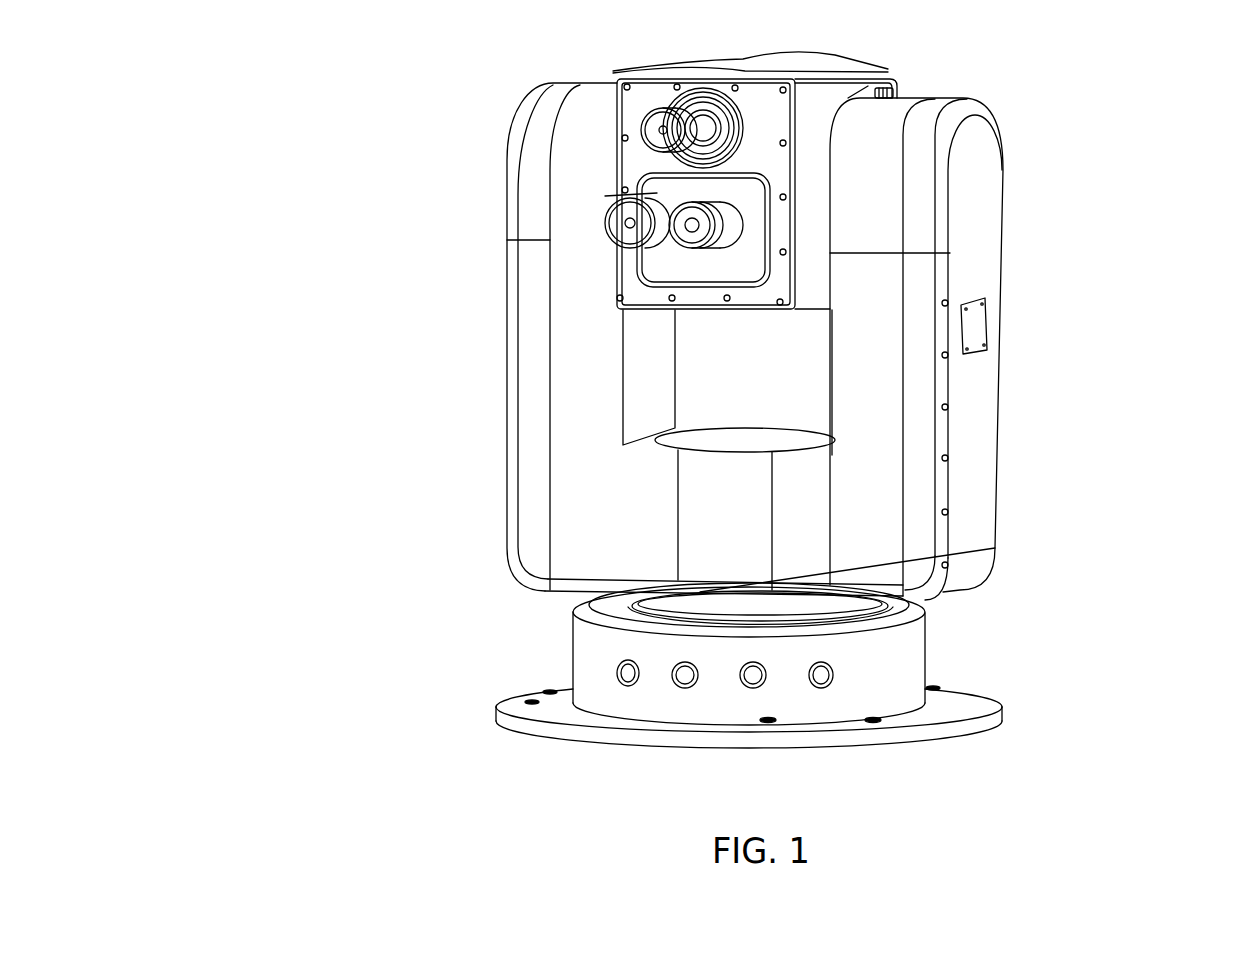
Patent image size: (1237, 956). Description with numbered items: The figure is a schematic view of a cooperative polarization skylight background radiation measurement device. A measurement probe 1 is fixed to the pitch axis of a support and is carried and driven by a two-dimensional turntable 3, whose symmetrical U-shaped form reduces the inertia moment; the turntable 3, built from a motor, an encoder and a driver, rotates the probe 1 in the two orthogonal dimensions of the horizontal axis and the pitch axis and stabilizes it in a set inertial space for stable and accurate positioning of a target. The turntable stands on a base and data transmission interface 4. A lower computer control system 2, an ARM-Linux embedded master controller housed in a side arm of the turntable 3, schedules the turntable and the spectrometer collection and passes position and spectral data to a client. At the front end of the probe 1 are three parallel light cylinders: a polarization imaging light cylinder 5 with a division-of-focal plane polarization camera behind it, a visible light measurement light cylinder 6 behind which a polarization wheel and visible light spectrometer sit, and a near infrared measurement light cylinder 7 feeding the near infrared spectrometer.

The measurement probe 1 is at (767, 158).
The lower computer control system 2 is at (968, 458).
The two-dimensional turntable 3 is at (737, 598).
The base and data transmission interface 4 is at (862, 667).
The polarization imaging light cylinder 5 is at (628, 120).
The visible light measurement light cylinder 6 is at (597, 220).
The near infrared measurement light cylinder 7 is at (678, 260).